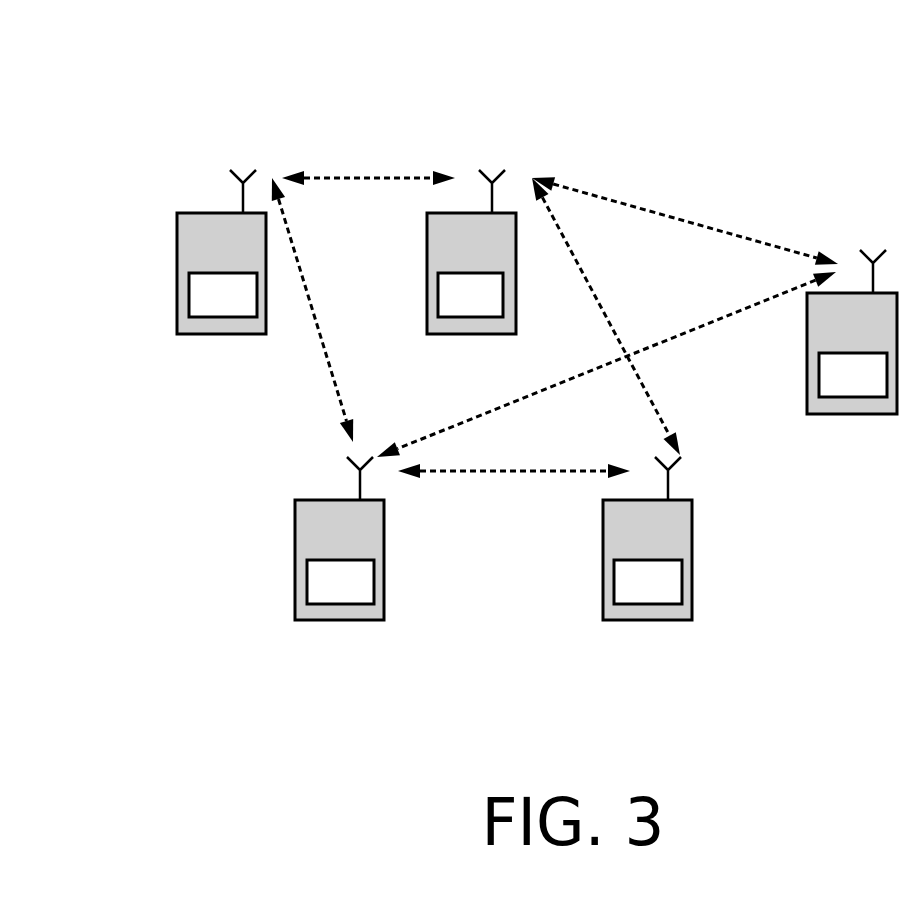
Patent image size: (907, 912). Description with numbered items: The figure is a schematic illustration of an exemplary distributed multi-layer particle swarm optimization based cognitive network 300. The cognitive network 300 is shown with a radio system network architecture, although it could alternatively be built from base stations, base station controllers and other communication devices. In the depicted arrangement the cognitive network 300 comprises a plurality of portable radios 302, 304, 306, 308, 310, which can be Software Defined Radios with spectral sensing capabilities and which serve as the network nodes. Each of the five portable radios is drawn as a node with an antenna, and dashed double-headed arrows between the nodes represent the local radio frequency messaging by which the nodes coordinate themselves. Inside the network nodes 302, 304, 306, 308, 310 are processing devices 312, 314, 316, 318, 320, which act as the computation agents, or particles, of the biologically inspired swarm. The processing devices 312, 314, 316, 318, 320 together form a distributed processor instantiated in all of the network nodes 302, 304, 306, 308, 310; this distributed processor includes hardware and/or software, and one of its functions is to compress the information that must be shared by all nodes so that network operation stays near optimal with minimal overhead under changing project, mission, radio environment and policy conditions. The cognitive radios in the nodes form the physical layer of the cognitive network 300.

The cognitive network 300 is at (135, 108).
The portable radio 302 is at (202, 260).
The portable radio 304 is at (452, 260).
The portable radio 306 is at (320, 547).
The portable radio 308 is at (628, 547).
The portable radio 310 is at (833, 340).
The processing device 312 is at (204, 306).
The processing device 314 is at (490, 306).
The processing device 316 is at (360, 593).
The processing device 318 is at (629, 593).
The processing device 320 is at (834, 386).